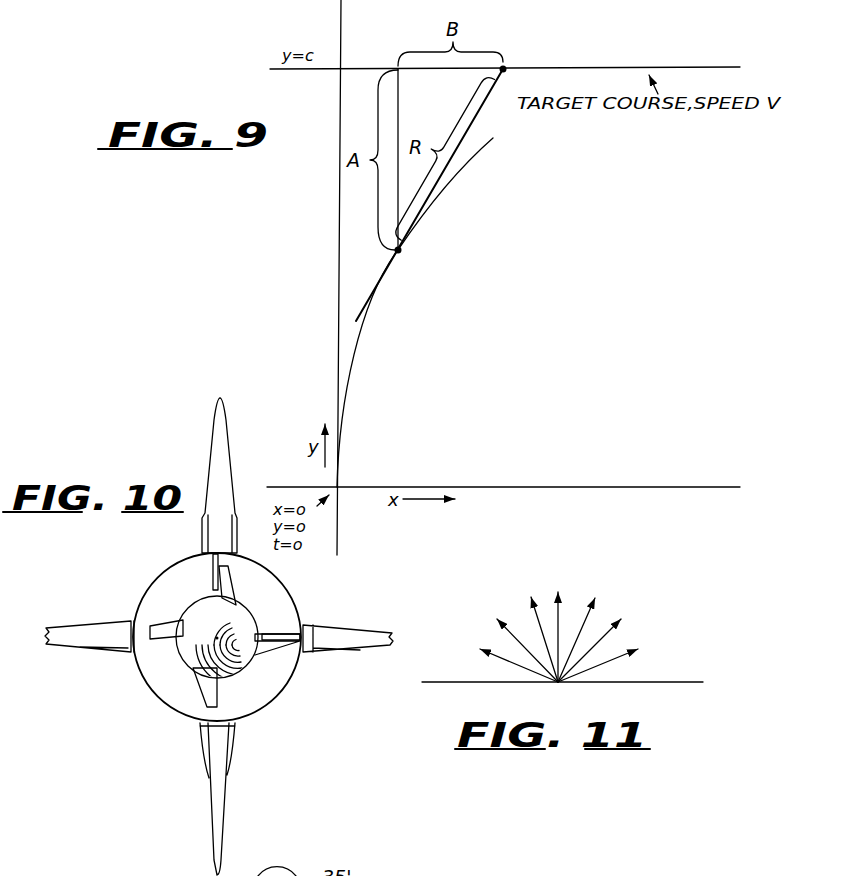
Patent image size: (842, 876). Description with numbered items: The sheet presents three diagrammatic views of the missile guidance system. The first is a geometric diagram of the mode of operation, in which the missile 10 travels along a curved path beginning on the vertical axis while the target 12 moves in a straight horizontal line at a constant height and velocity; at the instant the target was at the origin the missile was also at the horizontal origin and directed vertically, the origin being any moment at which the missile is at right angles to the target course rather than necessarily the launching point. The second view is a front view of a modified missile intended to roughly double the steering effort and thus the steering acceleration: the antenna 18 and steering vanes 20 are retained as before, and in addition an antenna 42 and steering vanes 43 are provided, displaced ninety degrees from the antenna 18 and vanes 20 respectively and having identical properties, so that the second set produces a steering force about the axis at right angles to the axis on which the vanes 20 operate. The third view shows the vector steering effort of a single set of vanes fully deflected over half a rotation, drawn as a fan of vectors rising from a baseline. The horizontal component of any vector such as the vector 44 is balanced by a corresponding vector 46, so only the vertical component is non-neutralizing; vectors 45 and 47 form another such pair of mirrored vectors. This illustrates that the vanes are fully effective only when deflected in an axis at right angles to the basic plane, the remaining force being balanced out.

In FIG. 9, the missile 10 is at (409, 251).
In FIG. 9, the target 12 is at (516, 60).
In FIG. 10, the antenna 18 is at (212, 568).
In FIG. 10, the steering vanes 20 is at (60, 648).
In FIG. 10, the antenna 42 is at (291, 633).
In FIG. 10, the steering vanes 43 is at (212, 430).
In FIG. 11, the vector 44 is at (493, 659).
In FIG. 11, the direction vector 45 is at (504, 640).
In FIG. 11, the vector 46 is at (617, 659).
In FIG. 11, the direction vector 47 is at (609, 640).